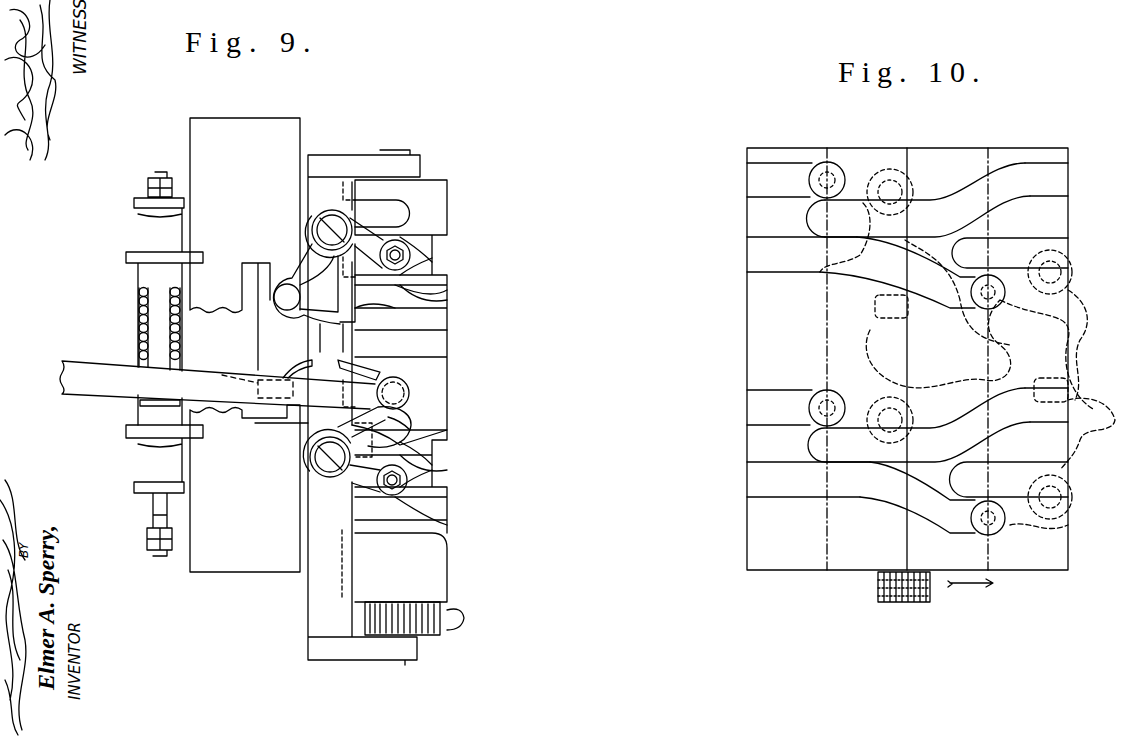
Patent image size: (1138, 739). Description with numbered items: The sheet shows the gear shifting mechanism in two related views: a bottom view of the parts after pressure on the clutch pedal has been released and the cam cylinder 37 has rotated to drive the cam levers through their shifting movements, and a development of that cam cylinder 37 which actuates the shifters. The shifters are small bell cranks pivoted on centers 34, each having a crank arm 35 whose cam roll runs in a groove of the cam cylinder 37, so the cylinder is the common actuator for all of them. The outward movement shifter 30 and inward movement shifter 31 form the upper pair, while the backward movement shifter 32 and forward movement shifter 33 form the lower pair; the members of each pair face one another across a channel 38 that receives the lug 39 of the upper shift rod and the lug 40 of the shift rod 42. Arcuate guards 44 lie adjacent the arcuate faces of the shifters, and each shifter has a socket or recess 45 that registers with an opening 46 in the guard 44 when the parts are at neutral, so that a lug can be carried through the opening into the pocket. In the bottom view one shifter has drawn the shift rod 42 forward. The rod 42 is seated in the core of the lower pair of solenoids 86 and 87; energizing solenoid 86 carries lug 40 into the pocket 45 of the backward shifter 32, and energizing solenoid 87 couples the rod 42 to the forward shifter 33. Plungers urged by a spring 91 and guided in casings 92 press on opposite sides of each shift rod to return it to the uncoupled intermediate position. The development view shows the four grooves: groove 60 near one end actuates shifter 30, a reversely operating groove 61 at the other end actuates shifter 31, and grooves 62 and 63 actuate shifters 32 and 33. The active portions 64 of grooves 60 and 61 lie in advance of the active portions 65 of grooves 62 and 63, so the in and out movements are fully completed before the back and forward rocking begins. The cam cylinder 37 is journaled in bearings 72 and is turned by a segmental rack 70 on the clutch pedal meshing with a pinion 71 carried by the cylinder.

In FIG. 10, the outward movement gear shifter 30 is at (1075, 345).
In FIG. 10, the inward movement gear shifter 31 is at (1085, 440).
In FIG. 9, the backward movement shifter 32 is at (400, 420).
In FIG. 10, the backward movement shifter 32 is at (905, 368).
In FIG. 9, the forward movement shifter 33 is at (300, 272).
In FIG. 10, the forward movement shifter 33 is at (912, 253).
In FIG. 9, the pivot center 34 is at (333, 225).
In FIG. 9, the crank arm 35 is at (365, 245).
In FIG. 9, the cam cylinder 37 is at (432, 385).
In FIG. 10, the cam cylinder 37 is at (758, 334).
In FIG. 9, the channel 38 is at (313, 351).
In FIG. 10, the lug 39 is at (1070, 388).
In FIG. 9, the lug 40 is at (400, 386).
In FIG. 10, the lug 40 is at (873, 307).
In FIG. 9, the shift rod 42 is at (96, 366).
In FIG. 9, the arcuate guard 44 is at (385, 327).
In FIG. 9, the socket or recess 45 is at (283, 300).
In FIG. 9, the opening 46 is at (326, 370).
In FIG. 9, the cam groove 60 is at (446, 305).
In FIG. 10, the cam groove 60 is at (907, 254).
In FIG. 9, the cam groove 61 is at (446, 531).
In FIG. 10, the cam groove 61 is at (907, 479).
In FIG. 9, the cam groove 62 is at (443, 487).
In FIG. 10, the cam groove 62 is at (907, 407).
In FIG. 9, the cam groove 63 is at (443, 259).
In FIG. 10, the cam groove 63 is at (907, 180).
In FIG. 10, the active portion 64 is at (912, 386).
In FIG. 10, the active portion 65 is at (918, 312).
In FIG. 9, the segmental rack 70 is at (460, 625).
In FIG. 9, the pinion 71 is at (400, 625).
In FIG. 10, the pinion 71 is at (905, 603).
In FIG. 9, the bearing 72 is at (372, 160).
In FIG. 9, the solenoid 86 is at (230, 558).
In FIG. 9, the solenoid 87 is at (236, 128).
In FIG. 9, the spring 91 is at (140, 320).
In FIG. 9, the casing 92 is at (140, 238).